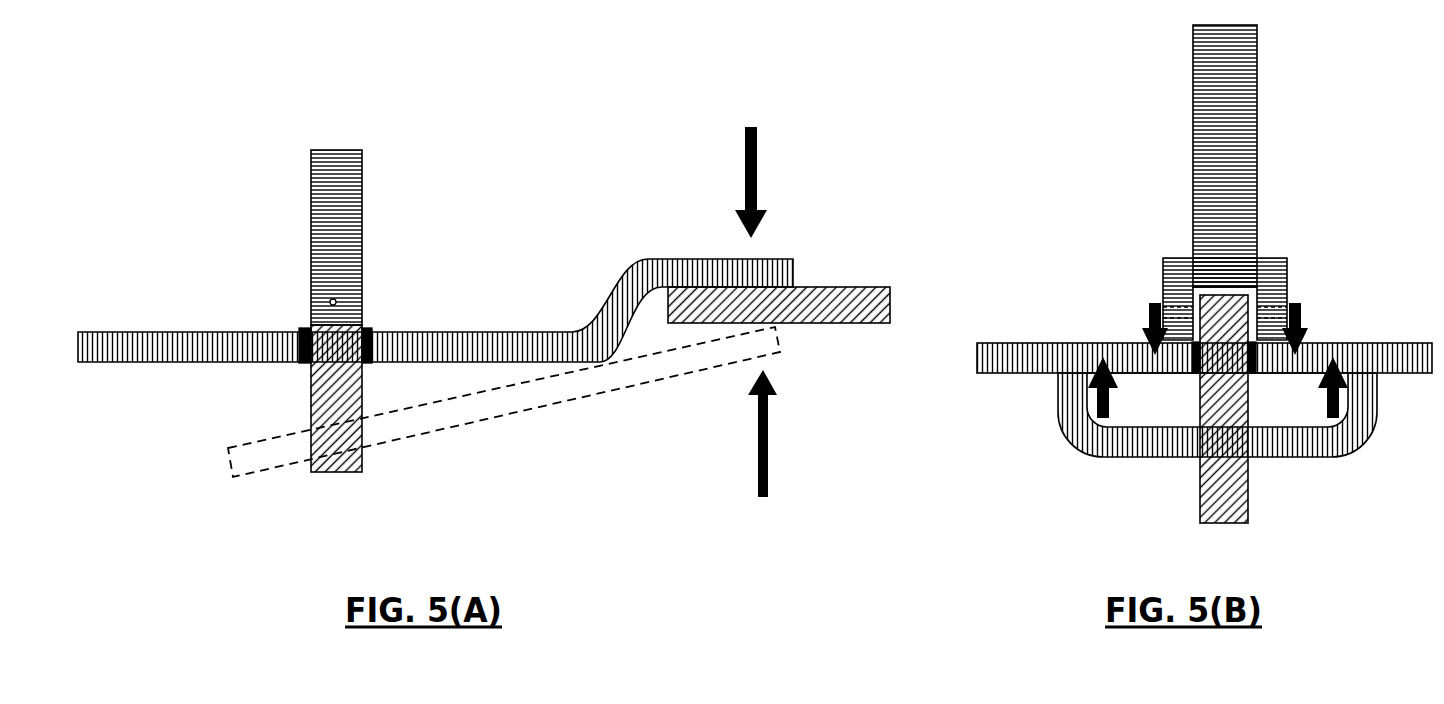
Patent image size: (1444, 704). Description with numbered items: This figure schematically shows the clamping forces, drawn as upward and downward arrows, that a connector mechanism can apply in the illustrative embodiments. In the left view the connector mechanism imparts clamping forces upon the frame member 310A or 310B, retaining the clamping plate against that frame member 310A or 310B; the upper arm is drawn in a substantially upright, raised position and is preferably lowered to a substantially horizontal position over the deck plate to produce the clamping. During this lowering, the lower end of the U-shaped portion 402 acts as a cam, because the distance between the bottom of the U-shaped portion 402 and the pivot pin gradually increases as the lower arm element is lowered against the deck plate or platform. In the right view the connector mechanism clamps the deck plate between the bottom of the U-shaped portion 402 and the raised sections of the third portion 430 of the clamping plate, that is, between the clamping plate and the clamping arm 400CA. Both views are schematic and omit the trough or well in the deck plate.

The U-shaped portion 402 is at (1288, 263).
The third portion 430 is at (1078, 460).
The clamping arm 400CA is at (316, 262).
The frame member 310A is at (853, 253).
The frame member 310B is at (840, 287).